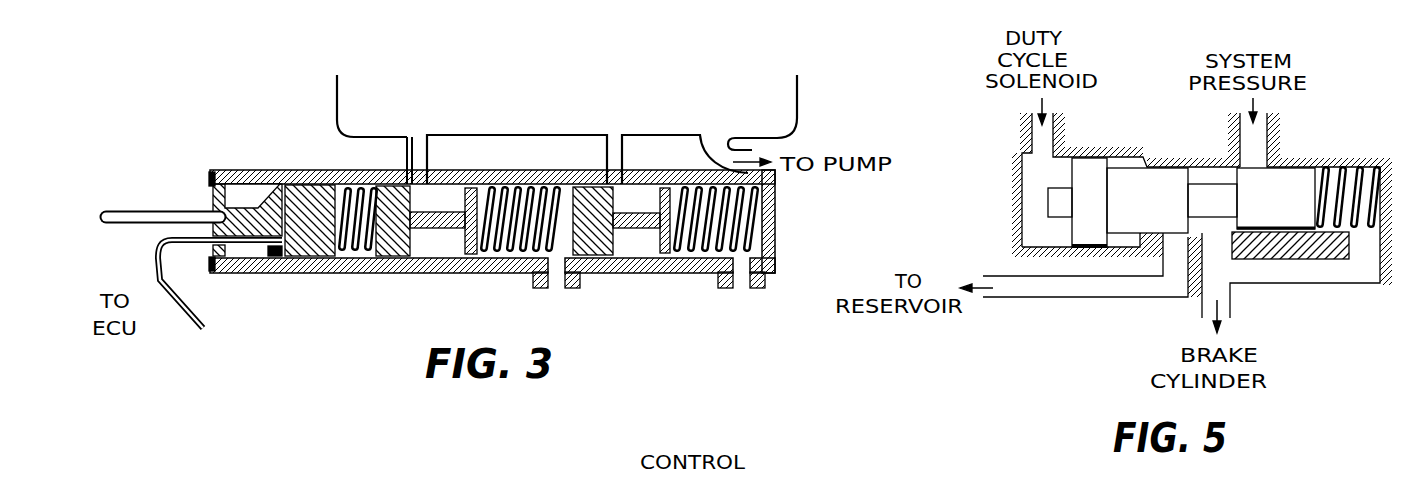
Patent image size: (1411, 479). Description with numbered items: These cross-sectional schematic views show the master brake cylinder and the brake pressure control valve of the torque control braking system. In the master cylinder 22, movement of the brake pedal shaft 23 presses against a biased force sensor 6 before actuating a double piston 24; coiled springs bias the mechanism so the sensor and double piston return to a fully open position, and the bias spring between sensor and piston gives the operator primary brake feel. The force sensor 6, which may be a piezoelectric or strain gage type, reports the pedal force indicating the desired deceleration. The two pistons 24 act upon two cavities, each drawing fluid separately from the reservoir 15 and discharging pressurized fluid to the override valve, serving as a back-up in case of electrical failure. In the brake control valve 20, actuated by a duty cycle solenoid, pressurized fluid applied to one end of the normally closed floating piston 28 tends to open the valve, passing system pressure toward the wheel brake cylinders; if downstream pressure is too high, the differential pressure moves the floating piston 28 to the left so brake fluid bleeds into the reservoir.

In FIG. 3, the force sensor 6 is at (308, 258).
In FIG. 3, the fluid reservoir 15 is at (337, 94).
In FIG. 3, the master cylinder 22 is at (303, 185).
In FIG. 3, the brake pedal shaft 23 is at (162, 210).
In FIG. 3, the double piston 24 is at (383, 260).
In FIG. 5, the brake control valve 20 is at (1130, 148).
In FIG. 5, the floating piston 28 is at (1048, 200).